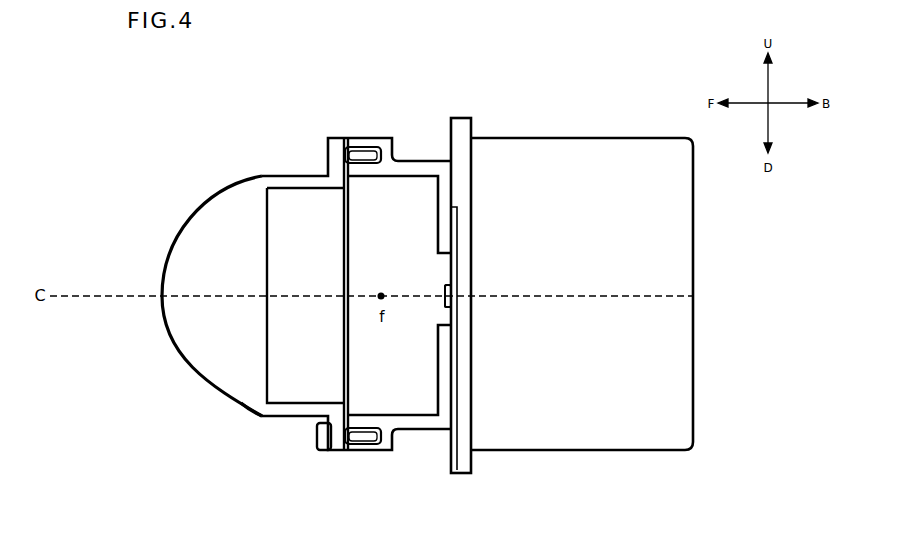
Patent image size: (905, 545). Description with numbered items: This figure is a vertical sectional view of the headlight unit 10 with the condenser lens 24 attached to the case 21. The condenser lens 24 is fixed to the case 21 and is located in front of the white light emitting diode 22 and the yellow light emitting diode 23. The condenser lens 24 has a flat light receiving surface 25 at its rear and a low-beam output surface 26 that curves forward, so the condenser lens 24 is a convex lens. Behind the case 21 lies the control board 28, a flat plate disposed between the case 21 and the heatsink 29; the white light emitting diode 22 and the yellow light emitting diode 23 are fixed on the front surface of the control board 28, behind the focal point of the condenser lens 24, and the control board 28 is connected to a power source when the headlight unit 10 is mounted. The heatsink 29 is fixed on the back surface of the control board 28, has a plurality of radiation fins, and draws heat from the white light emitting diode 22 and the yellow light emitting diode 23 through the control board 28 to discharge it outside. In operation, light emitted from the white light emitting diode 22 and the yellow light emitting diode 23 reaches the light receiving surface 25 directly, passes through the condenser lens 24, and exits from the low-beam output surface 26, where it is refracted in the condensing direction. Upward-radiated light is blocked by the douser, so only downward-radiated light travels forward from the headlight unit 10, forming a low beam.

The headlight unit 10 is at (339, 56).
The case 21 is at (382, 453).
The white light emitting diode 22 is at (445, 287).
The yellow light emitting diode 23 is at (445, 287).
The condenser lens 24 is at (247, 200).
The light receiving surface 25 is at (282, 197).
The low-beam output surface 26 is at (245, 407).
The control board 28 is at (458, 317).
The heatsink 29 is at (555, 428).